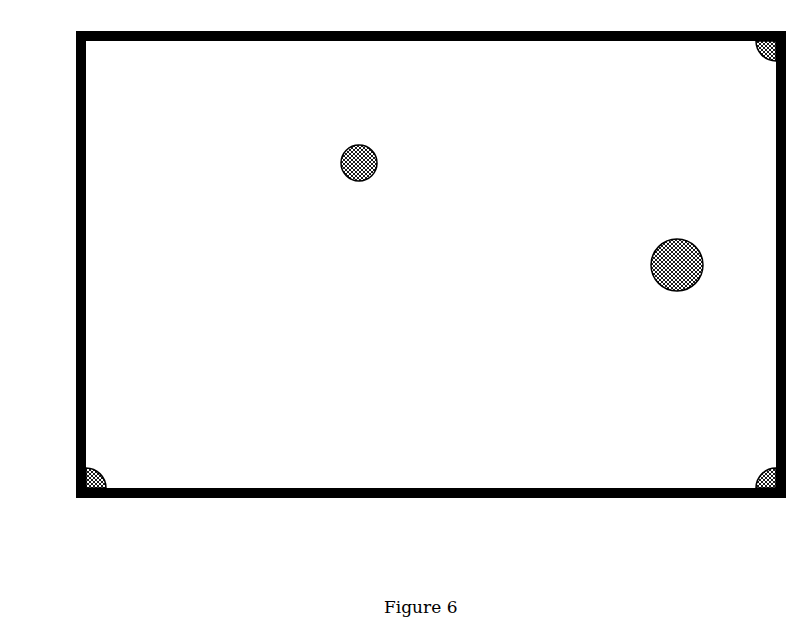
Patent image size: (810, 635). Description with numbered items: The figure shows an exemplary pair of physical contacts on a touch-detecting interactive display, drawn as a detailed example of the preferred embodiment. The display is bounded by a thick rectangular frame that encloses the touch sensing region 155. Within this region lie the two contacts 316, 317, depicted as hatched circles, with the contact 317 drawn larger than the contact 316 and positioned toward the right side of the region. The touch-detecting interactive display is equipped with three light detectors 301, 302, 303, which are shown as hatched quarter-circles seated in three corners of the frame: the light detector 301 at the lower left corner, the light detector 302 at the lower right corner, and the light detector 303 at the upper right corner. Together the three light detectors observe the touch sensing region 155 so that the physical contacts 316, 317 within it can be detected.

The touch sensing region 155 is at (458, 60).
The light detector 301 is at (78, 470).
The light detector 302 is at (760, 477).
The light detector 303 is at (763, 57).
The contact 316 is at (350, 159).
The contact 317 is at (670, 257).